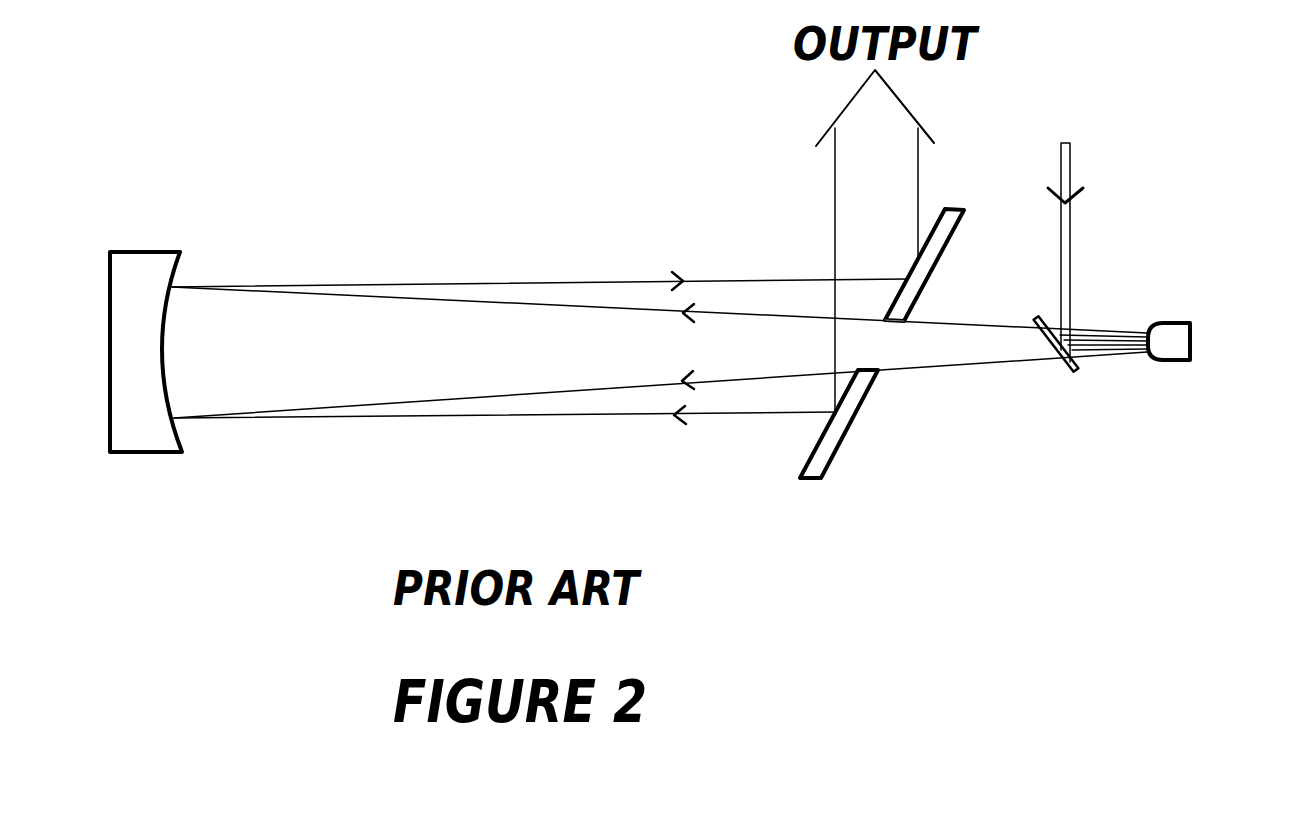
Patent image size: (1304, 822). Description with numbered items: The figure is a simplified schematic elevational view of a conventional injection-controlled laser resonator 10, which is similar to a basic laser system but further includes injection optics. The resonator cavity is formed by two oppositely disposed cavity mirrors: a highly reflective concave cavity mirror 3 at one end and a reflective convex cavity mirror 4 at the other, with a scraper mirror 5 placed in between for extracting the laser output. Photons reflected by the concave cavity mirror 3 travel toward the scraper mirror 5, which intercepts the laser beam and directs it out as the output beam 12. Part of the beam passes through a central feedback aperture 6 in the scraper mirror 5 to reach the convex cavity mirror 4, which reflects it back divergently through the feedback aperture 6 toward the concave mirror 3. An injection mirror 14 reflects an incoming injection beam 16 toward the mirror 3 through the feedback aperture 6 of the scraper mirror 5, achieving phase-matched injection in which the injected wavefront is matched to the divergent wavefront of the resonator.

The injection-controlled laser resonator 10 is at (472, 65).
The concave cavity mirror 3 is at (130, 287).
The convex cavity mirror 4 is at (1170, 342).
The scraper mirror 5 is at (833, 443).
The central feedback aperture 6 is at (902, 343).
The output beam 12 is at (852, 213).
The injection mirror 14 is at (1058, 326).
The injection beam 16 is at (1065, 182).